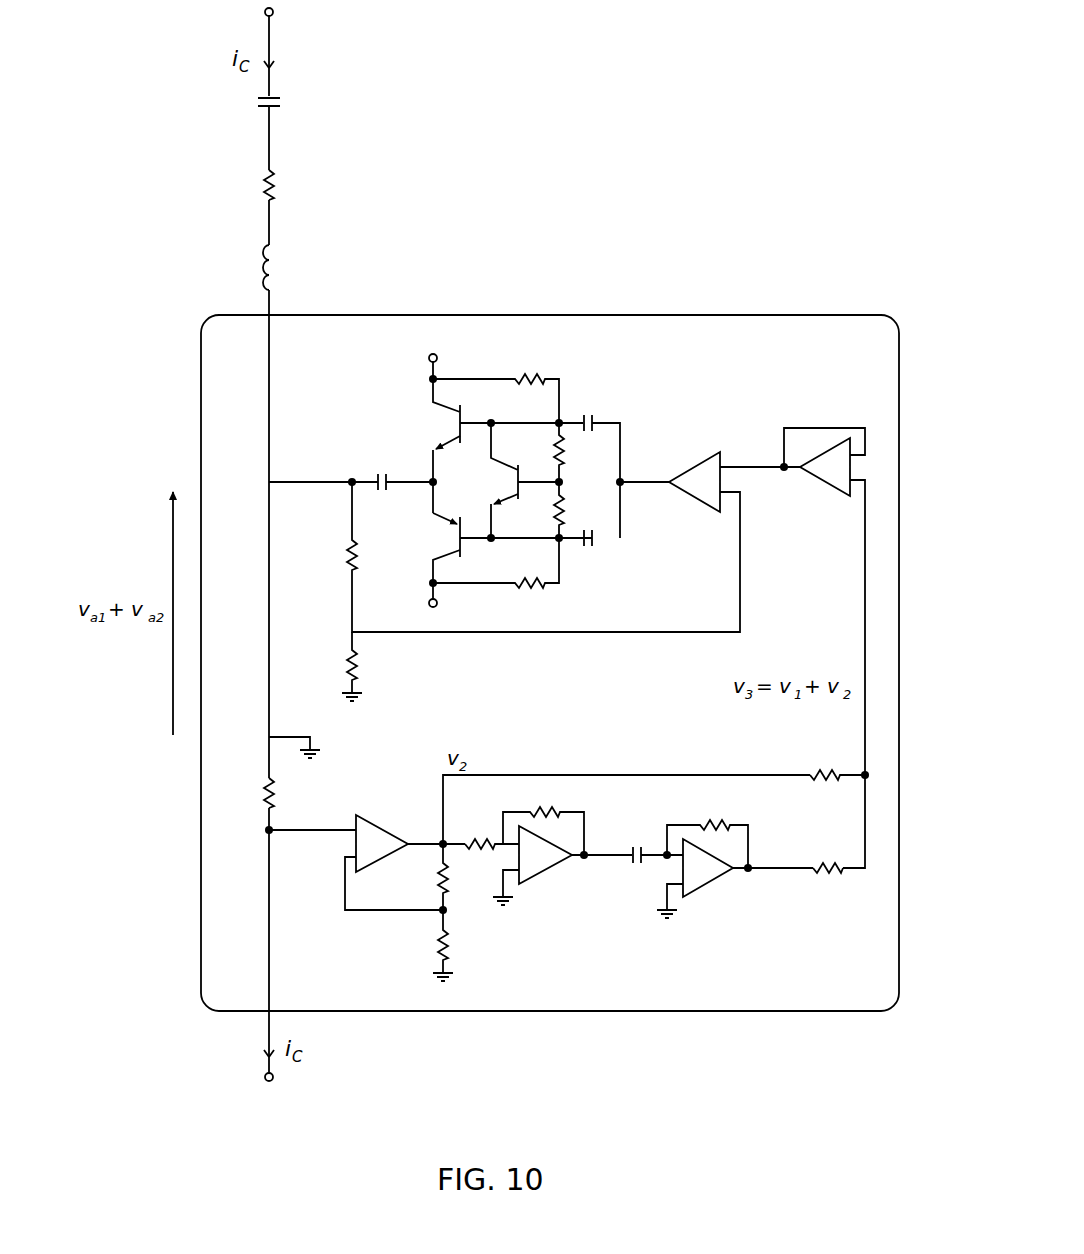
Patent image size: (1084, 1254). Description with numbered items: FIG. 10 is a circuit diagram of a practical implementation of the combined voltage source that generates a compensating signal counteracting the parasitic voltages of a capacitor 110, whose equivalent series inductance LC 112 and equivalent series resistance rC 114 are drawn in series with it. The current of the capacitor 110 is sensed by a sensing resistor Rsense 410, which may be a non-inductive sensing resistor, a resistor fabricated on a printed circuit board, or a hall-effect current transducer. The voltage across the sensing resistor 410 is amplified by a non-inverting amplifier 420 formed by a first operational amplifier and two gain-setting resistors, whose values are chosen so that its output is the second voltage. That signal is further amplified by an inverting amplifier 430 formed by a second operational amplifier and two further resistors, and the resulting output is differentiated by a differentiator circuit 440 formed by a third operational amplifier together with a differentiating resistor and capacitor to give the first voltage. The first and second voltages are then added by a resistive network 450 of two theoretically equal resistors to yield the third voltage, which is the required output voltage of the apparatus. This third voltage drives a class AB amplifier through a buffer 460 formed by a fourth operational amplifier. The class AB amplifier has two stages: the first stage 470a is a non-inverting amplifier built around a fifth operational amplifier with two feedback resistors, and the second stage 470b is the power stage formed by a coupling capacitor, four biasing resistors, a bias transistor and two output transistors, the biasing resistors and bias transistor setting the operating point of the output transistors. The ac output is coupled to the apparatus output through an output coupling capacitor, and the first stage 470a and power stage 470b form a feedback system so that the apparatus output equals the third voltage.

The capacitor 110 is at (276, 98).
The ESR rC 114 is at (277, 177).
The ESL LC 112 is at (277, 258).
The second stage 470b is at (528, 338).
The first stage 470a is at (698, 435).
The buffer 460 is at (826, 413).
The sensing resistor Rsense 410 is at (280, 790).
The non-inverting amplifier 420 is at (380, 934).
The inverting amplifier 430 is at (557, 906).
The differentiator circuit 440 is at (705, 928).
The resistive network 450 is at (825, 890).